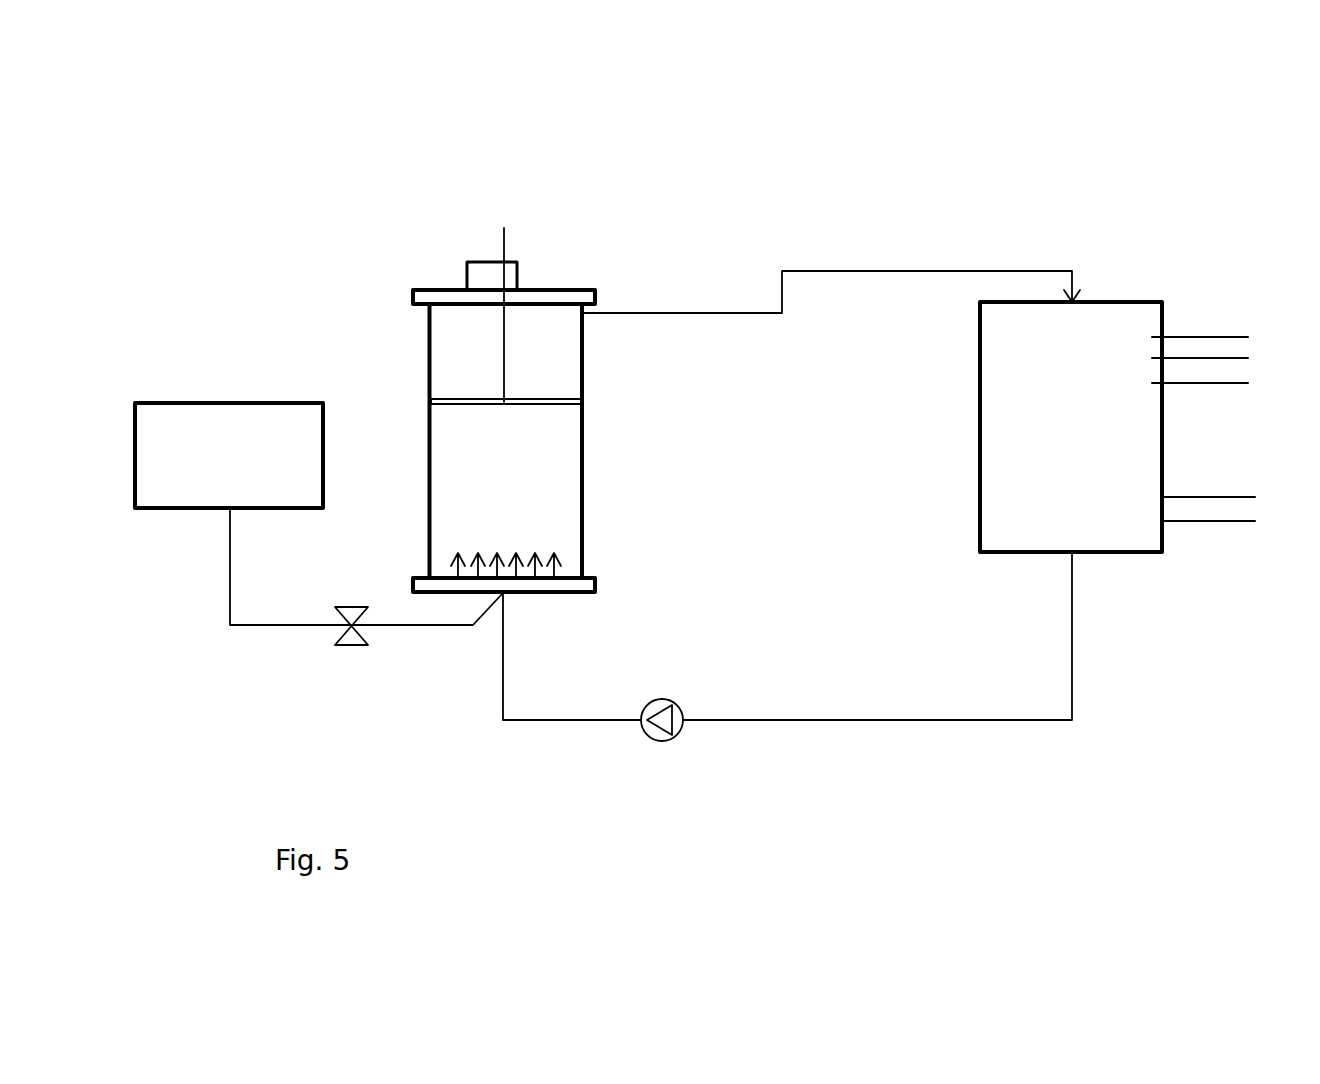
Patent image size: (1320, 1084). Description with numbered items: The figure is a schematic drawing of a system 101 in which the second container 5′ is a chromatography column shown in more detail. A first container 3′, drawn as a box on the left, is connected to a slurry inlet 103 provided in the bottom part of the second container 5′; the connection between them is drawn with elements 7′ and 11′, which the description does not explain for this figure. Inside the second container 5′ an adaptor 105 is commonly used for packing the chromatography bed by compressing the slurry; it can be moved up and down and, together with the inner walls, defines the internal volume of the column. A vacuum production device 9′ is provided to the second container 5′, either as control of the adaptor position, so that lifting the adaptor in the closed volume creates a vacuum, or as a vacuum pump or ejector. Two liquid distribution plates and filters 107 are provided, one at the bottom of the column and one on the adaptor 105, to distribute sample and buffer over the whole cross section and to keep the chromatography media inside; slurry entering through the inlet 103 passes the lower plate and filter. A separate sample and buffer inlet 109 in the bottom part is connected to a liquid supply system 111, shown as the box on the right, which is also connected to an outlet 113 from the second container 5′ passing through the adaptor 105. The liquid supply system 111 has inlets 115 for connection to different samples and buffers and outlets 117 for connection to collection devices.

The system 101 is at (272, 228).
The first container 3′ is at (215, 403).
The supply line 7′ is at (228, 597).
The valve 11′ is at (345, 647).
The second container 5′ is at (584, 441).
The vacuum production device 9′ is at (468, 262).
The adaptor 105 is at (582, 402).
The liquid distribution plates and filters 107 is at (480, 407).
The sample and buffer inlet 109 is at (511, 610).
The slurry inlet 103 is at (503, 593).
The outlet 113 is at (512, 315).
The liquid supply system 111 is at (928, 433).
The inlets 115 is at (1190, 358).
The outlets 117 is at (1203, 500).